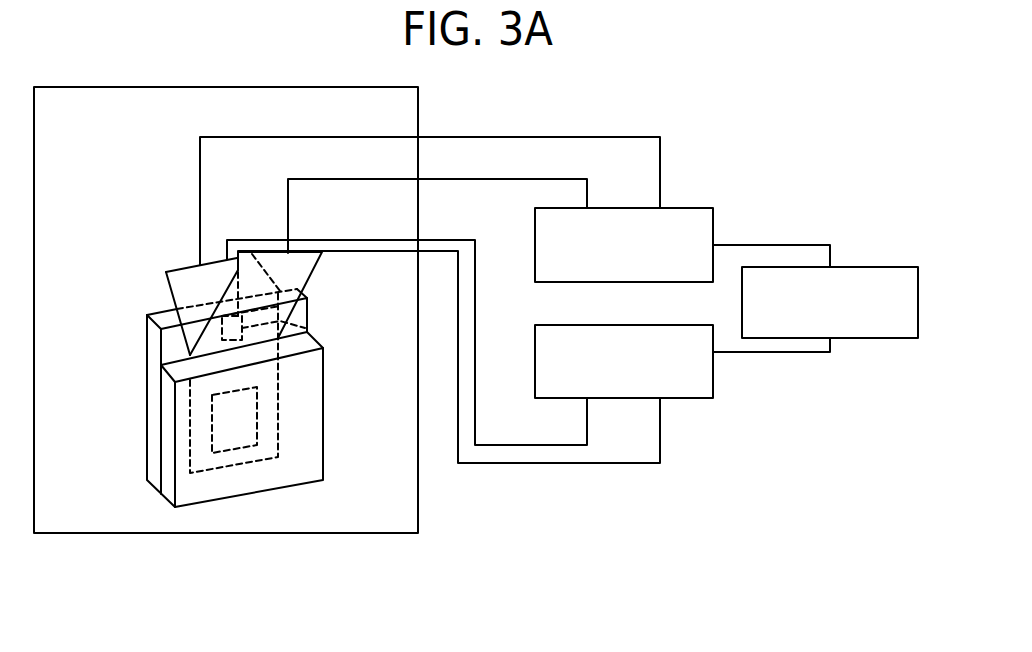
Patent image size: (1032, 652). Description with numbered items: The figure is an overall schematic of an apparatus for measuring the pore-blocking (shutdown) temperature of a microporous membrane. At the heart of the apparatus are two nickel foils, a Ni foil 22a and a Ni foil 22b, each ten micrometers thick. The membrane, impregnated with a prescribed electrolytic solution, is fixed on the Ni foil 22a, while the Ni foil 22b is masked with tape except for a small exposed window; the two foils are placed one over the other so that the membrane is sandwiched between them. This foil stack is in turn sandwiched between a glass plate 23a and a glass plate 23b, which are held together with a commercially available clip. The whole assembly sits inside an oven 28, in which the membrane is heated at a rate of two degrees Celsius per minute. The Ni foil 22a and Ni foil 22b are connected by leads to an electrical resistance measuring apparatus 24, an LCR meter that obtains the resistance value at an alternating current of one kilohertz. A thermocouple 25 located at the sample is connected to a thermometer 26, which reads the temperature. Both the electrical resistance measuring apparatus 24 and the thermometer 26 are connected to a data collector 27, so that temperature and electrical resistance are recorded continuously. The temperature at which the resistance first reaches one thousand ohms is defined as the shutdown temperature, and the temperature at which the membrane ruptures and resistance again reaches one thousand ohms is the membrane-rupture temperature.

The Ni foil 22a is at (178, 268).
The Ni foil 22b is at (316, 269).
The glass plate 23a is at (151, 390).
The glass plate 23b is at (166, 453).
The electrical resistance measuring apparatus 24 is at (624, 245).
The thermocouple 25 is at (305, 328).
The thermometer 26 is at (624, 361).
The data collector 27 is at (830, 302).
The oven 28 is at (228, 533).